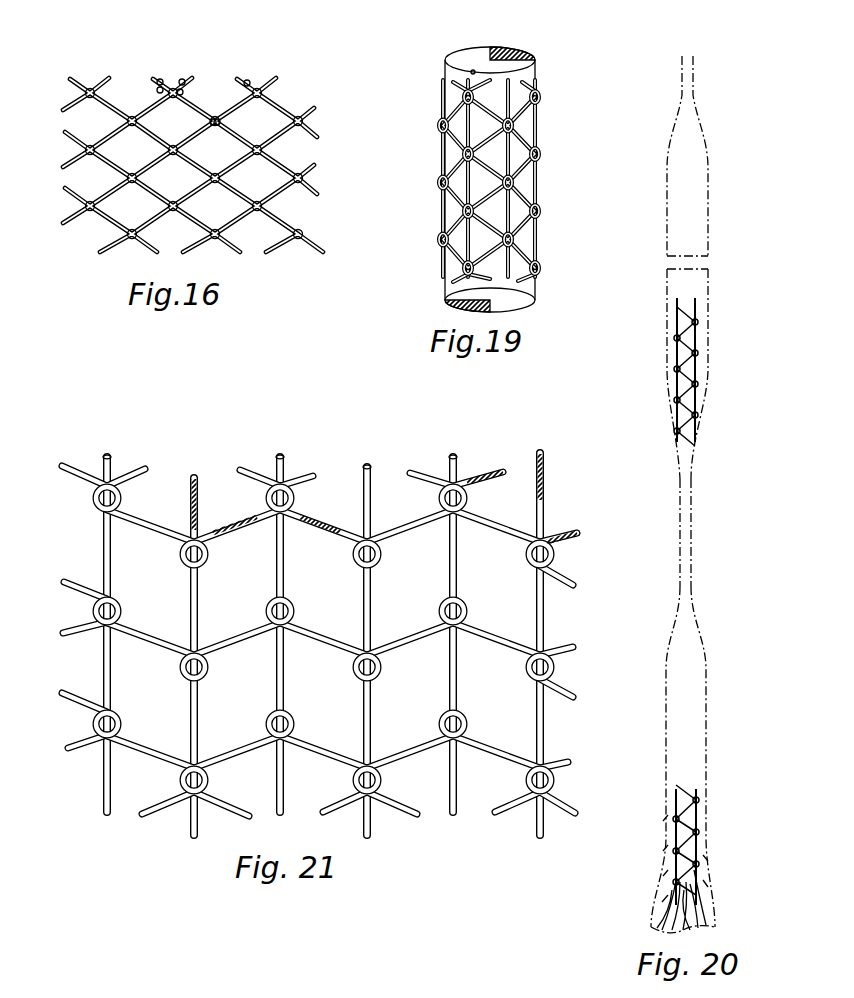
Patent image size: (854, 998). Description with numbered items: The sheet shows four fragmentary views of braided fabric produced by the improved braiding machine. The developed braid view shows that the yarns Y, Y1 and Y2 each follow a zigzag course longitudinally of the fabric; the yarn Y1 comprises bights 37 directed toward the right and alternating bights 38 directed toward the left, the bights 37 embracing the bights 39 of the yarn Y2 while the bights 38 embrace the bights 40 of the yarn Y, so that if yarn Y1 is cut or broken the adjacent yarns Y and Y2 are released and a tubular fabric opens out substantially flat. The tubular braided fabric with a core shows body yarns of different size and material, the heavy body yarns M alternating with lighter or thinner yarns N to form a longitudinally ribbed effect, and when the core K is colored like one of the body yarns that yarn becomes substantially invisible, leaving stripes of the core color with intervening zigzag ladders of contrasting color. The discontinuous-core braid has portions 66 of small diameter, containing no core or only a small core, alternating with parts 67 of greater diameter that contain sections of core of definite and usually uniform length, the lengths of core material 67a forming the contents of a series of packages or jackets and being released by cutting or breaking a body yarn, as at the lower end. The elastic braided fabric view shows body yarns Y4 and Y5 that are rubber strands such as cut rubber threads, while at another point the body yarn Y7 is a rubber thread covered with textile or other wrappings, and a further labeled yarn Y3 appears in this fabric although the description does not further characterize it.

In FIG. 16, the bights 37 is at (217, 122).
In FIG. 16, the bights 38 is at (160, 90).
In FIG. 16, the bights 39 is at (212, 122).
In FIG. 16, the bights 40 is at (181, 92).
In FIG. 16, the yarn Y is at (157, 80).
In FIG. 16, the yarn Y1 is at (182, 82).
In FIG. 16, the yarn Y2 is at (247, 83).
In FIG. 21, the yarn Y2 is at (557, 533).
In FIG. 21, the longitudinal rod Y3 is at (545, 472).
In FIG. 21, the body yarn Y4 is at (202, 474).
In FIG. 21, the body yarn Y5 is at (243, 470).
In FIG. 21, the body yarn Y7 is at (472, 476).
In FIG. 19, the body yarns M is at (473, 72).
In FIG. 19, the core K is at (523, 68).
In FIG. 19, the body yarns N is at (533, 115).
In FIG. 20, the portions 66 is at (691, 67).
In FIG. 20, the parts 67 is at (704, 285).
In FIG. 20, the lengths of core material 67a is at (688, 338).